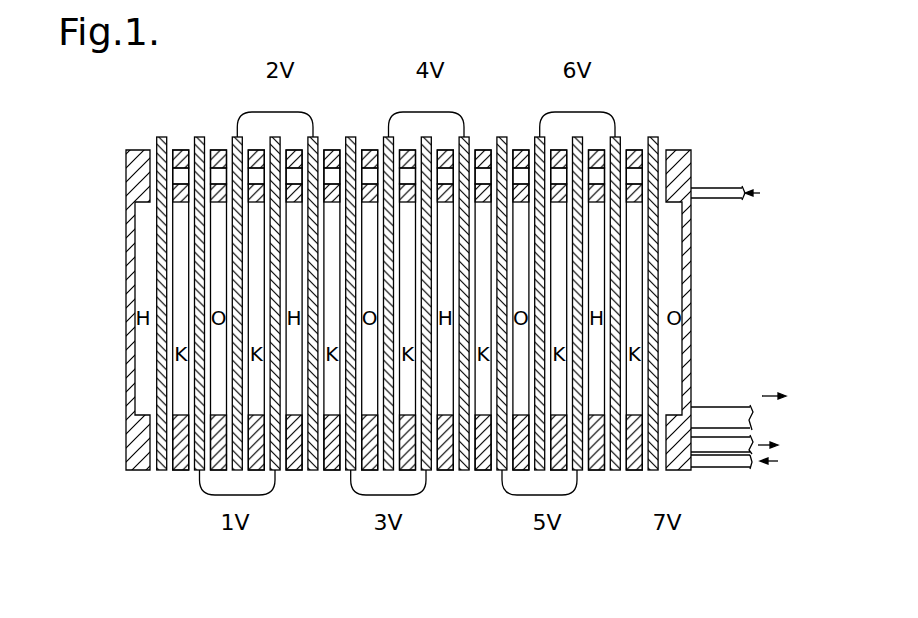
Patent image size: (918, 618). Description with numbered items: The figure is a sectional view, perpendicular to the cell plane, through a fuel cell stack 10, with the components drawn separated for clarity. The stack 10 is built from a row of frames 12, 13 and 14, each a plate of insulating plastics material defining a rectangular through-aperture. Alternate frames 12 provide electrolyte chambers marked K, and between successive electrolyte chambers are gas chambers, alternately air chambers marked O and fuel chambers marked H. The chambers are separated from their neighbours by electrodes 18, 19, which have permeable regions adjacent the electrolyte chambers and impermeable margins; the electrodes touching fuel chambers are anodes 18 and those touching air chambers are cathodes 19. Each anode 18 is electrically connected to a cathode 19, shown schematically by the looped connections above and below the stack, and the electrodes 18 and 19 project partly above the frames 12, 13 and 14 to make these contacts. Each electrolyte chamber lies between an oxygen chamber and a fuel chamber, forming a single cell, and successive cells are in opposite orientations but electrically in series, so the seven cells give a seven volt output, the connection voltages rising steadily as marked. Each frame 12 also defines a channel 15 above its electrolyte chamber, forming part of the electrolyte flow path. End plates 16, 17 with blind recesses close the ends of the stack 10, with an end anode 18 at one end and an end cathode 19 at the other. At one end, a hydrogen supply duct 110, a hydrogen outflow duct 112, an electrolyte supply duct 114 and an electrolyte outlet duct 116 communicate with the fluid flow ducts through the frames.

The fuel cell stack 10 is at (640, 69).
The frame 12 is at (180, 157).
The frame 13 is at (218, 152).
The frame 14 is at (292, 156).
The channel 15 is at (176, 176).
The end plate 16 is at (127, 173).
The end plate 17 is at (684, 158).
The anode 18 is at (160, 277).
The cathode 19 is at (235, 402).
The hydrogen supply duct 110 is at (693, 197).
The hydrogen outflow duct 112 is at (725, 442).
The electrolyte supply duct 114 is at (703, 460).
The electrolyte outlet duct 116 is at (698, 414).